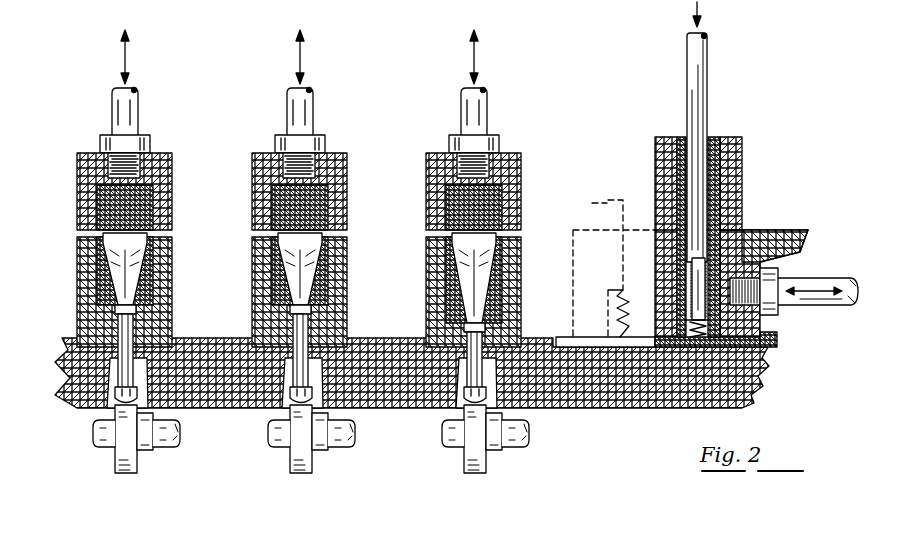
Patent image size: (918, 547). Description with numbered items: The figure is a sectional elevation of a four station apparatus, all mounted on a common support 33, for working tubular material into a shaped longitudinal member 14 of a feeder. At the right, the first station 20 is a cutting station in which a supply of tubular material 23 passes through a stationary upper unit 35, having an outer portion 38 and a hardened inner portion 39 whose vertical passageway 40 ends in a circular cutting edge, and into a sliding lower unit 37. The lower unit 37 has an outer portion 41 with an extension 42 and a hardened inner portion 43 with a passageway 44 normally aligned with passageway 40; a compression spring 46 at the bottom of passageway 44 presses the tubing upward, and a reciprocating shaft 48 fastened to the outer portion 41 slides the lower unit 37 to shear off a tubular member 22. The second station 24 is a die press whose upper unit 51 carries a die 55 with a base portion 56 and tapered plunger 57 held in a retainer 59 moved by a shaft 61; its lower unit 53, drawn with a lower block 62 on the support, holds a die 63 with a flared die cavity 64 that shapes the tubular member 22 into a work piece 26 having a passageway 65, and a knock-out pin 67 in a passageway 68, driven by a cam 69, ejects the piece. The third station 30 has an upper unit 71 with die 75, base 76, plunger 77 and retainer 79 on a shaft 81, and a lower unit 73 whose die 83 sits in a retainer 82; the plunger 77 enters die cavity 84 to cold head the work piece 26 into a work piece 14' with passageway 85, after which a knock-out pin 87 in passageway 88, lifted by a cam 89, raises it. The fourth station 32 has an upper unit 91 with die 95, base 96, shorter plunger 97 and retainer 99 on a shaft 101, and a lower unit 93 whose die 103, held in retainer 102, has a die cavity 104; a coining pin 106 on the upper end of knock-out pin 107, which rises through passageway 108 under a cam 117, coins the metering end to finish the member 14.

The shaped longitudinal member 14 is at (86, 269).
The longitudinal member of essentially final form 14' is at (261, 269).
The first station 20 is at (647, 182).
The tubular member 22 is at (611, 265).
The tubular material 23 is at (707, 47).
The second station 24 is at (533, 243).
The tubular work piece 26 is at (470, 270).
The third station 30 is at (358, 246).
The fourth station 32 is at (200, 212).
The support 33 is at (600, 393).
The upper unit 35 is at (743, 147).
The lower unit 37 is at (795, 225).
The outer portion 38 is at (742, 139).
The inner portion 39 is at (675, 135).
The passageway 40 is at (681, 145).
The outer portion 41 is at (657, 248).
The extension 42 is at (808, 238).
The inner portion 43 is at (717, 260).
The passageway 44 is at (706, 240).
The compression spring 46 is at (700, 326).
The shaft 48 is at (837, 277).
The upper unit 51 is at (446, 158).
The lower unit 53 is at (462, 240).
The die 55 is at (459, 178).
The base portion 56 is at (497, 193).
The plunger 57 is at (468, 248).
The retainer 59 is at (428, 160).
The shaft 61 is at (486, 90).
The lower block 62 is at (428, 317).
The die 63 is at (467, 260).
The die cavity 64 is at (472, 295).
The passageway 65 is at (472, 280).
The knock-out pin 67 is at (468, 378).
The passageway 68 is at (478, 336).
The cam 69 is at (463, 466).
The upper unit 71 is at (256, 153).
The lower unit 73 is at (285, 252).
The die 75 is at (285, 178).
The base 76 is at (323, 193).
The plunger 77 is at (298, 262).
The retainer 79 is at (253, 160).
The shaft 81 is at (309, 90).
The retainer 82 is at (280, 295).
The die 83 is at (288, 307).
The die cavity 84 is at (293, 287).
The passageway 85 is at (297, 280).
The knock-out pin 87 is at (288, 378).
The passageway 88 is at (302, 324).
The cam 89 is at (288, 466).
The upper unit 91 is at (80, 152).
The lower unit 93 is at (112, 248).
The die 95 is at (108, 178).
The base 96 is at (148, 193).
The plunger 97 is at (124, 258).
The retainer 99 is at (78, 156).
The shaft 101 is at (135, 89).
The retainer 102 is at (80, 287).
The die 103 is at (116, 308).
The die cavity 104 is at (118, 268).
The coining pin 106 is at (68, 359).
The knock-out pin 107 is at (112, 394).
The passageway 108 is at (118, 374).
The cam 117 is at (115, 462).